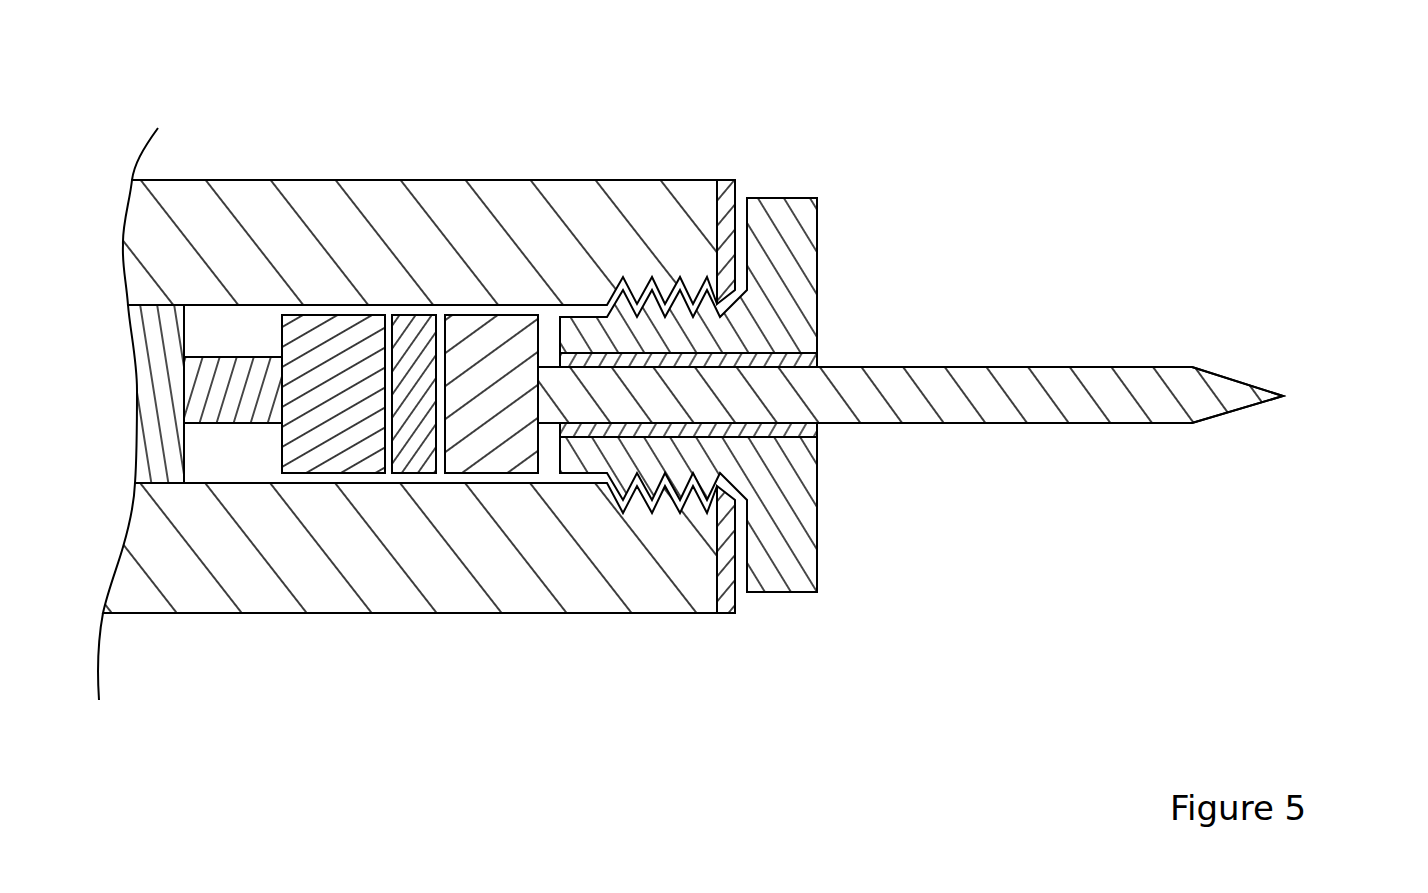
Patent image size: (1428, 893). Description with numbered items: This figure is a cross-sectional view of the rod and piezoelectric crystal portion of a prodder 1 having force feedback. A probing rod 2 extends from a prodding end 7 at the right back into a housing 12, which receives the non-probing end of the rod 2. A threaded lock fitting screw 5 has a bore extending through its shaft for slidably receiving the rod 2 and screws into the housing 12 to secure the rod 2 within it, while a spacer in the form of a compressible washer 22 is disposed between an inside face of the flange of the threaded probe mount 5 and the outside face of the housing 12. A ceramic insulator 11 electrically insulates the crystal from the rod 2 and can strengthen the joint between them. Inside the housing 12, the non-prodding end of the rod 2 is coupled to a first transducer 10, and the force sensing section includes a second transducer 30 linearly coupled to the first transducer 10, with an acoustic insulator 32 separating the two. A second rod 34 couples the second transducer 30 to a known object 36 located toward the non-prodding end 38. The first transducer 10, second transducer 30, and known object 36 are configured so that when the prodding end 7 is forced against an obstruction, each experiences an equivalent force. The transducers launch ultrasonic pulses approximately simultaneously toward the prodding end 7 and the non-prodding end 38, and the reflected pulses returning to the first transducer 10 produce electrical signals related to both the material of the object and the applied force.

The prodder 1 is at (897, 258).
The probing rod 2 is at (947, 368).
The threaded lock fitting screw 5 is at (820, 548).
The prodding end 7 is at (1245, 382).
The first transducer 10 is at (478, 316).
The ceramic insulator 11 is at (820, 432).
The housing 12 is at (390, 179).
The compressible washer 22 is at (737, 610).
The second transducer 30 is at (303, 317).
The acoustic insulator 32 is at (403, 473).
The second rod 34 is at (242, 425).
The known object 36 is at (172, 306).
The non-prodding end 38 is at (178, 383).